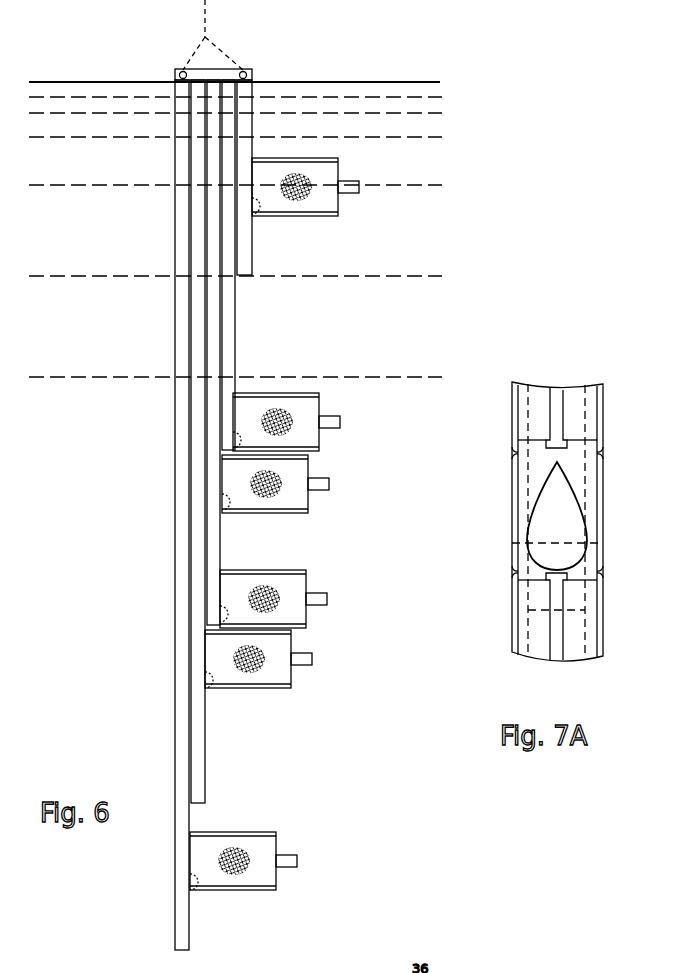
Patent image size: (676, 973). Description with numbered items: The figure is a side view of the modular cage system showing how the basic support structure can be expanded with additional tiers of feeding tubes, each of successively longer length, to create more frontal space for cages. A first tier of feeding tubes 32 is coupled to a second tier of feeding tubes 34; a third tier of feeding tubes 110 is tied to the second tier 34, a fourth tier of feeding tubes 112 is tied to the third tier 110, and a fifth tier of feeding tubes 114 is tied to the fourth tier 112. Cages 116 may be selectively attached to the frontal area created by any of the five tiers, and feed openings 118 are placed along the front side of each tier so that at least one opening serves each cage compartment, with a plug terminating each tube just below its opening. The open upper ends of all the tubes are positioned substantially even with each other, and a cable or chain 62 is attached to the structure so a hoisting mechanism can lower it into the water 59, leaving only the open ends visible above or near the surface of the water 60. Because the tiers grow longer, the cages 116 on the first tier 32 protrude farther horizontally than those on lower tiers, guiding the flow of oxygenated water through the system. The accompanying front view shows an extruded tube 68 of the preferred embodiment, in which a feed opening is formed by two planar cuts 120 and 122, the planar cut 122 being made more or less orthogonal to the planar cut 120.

In FIG. 6, the surface of the water 60 is at (115, 82).
In FIG. 6, the cable or chain 62 is at (206, 22).
In FIG. 6, the water 59 is at (430, 248).
In FIG. 6, the first tier of feeding tubes 32 is at (250, 100).
In FIG. 6, the second tier of feeding tubes 34 is at (228, 130).
In FIG. 6, the third tier of feeding tubes 110 is at (213, 316).
In FIG. 6, the fourth tier of feeding tubes 112 is at (197, 318).
In FIG. 6, the fifth tier of feeding tubes 114 is at (182, 352).
In FIG. 6, the cages 116 is at (325, 216).
In FIG. 6, the feed openings 118 is at (255, 206).
In FIG. 7A, the extruded tube 68 is at (565, 383).
In FIG. 7A, the planar cut 120 is at (522, 469).
In FIG. 7A, the planar cut 122 is at (591, 559).